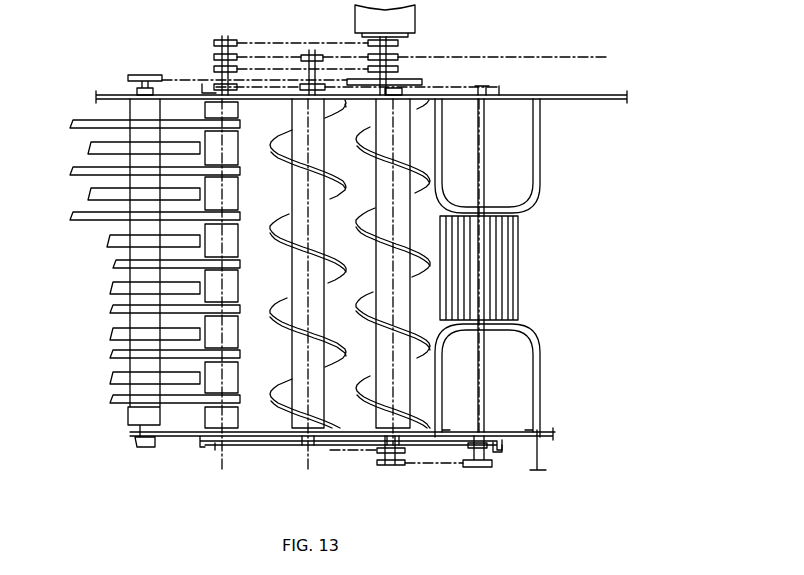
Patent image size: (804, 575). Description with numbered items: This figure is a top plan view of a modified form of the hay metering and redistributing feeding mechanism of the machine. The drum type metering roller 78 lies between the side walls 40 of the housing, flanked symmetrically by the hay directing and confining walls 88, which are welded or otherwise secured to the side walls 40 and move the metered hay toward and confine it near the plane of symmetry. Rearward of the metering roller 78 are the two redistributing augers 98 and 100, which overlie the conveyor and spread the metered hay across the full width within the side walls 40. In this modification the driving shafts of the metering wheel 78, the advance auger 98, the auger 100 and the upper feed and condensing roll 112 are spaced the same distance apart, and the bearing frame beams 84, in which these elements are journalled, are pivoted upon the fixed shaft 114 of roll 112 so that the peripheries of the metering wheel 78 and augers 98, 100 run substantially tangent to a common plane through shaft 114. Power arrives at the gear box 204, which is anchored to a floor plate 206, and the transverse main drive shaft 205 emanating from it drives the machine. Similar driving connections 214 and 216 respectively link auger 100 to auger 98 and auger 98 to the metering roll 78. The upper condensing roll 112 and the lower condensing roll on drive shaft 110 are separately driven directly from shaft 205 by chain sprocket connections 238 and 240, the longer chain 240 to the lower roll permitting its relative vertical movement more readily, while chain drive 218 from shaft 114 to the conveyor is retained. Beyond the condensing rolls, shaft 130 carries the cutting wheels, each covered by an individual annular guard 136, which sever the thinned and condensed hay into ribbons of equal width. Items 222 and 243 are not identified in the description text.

The side walls 40 is at (581, 93).
The drum type metering roller 78 is at (518, 268).
The mounting beams 84 is at (458, 94).
The hay directing and confining walls 88 is at (541, 170).
The advance auger 98 is at (409, 138).
The auger 100 is at (325, 168).
The drive shaft 110 is at (224, 38).
The upper feed and condensing roll 112 is at (244, 165).
The fixed shaft 114 is at (213, 72).
The shaft 130 is at (130, 86).
The annular guards 136 is at (90, 193).
The gear box 204 is at (417, 20).
The main drive shaft 205 is at (400, 43).
The floor plate 206 is at (548, 59).
The driving connection 214 is at (350, 452).
The driving connection 216 is at (442, 467).
The chain drive 218 is at (258, 55).
The belt 222 is at (164, 76).
The chain sprocket connection 238 is at (336, 75).
The chain sprocket connection 240 is at (281, 42).
The pulley 243 is at (314, 54).